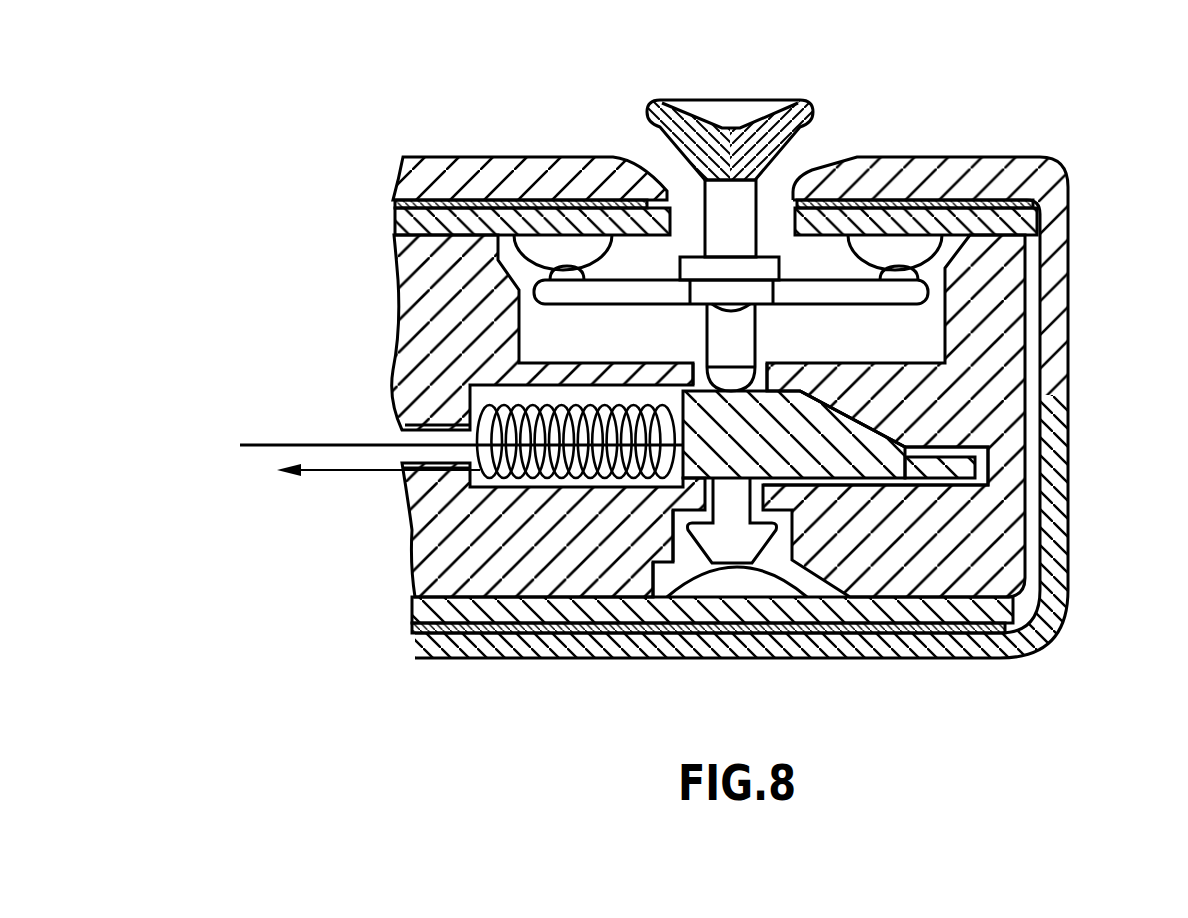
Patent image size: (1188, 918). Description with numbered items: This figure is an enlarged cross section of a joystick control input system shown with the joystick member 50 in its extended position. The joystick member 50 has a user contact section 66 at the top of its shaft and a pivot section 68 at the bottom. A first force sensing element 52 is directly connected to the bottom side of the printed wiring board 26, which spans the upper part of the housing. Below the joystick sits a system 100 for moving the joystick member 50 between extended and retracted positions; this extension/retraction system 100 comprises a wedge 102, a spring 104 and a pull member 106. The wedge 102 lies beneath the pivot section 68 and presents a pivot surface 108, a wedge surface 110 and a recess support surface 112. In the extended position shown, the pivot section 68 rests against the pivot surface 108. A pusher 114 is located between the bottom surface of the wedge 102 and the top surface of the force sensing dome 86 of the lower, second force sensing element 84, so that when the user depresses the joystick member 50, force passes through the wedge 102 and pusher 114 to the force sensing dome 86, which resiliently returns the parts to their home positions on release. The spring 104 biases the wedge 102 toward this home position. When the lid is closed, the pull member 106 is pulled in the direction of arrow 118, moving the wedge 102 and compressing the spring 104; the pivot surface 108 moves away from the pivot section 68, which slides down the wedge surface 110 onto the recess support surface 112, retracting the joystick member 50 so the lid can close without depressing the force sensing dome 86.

The joystick member 50 is at (677, 376).
The user contact section 66 is at (660, 100).
The first force sensing element 52 is at (915, 260).
The printed wiring board 26 is at (413, 220).
The spring 104 is at (583, 403).
The pivot section 68 is at (728, 385).
The pivot surface 108 is at (757, 388).
The wedge surface 110 is at (855, 435).
The recess support surface 112 is at (943, 435).
The extension/retraction system 100 is at (817, 453).
The wedge 102 is at (877, 460).
The pull member 106 is at (310, 443).
The arrow 118 is at (336, 472).
The second force sensing element 84 is at (670, 582).
The force sensing dome 86 is at (733, 582).
The pusher 114 is at (749, 540).